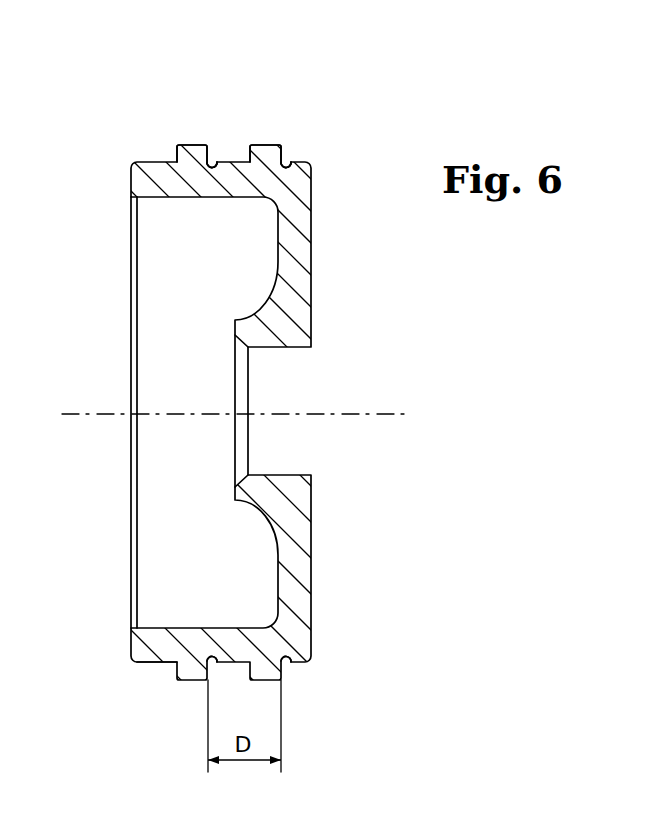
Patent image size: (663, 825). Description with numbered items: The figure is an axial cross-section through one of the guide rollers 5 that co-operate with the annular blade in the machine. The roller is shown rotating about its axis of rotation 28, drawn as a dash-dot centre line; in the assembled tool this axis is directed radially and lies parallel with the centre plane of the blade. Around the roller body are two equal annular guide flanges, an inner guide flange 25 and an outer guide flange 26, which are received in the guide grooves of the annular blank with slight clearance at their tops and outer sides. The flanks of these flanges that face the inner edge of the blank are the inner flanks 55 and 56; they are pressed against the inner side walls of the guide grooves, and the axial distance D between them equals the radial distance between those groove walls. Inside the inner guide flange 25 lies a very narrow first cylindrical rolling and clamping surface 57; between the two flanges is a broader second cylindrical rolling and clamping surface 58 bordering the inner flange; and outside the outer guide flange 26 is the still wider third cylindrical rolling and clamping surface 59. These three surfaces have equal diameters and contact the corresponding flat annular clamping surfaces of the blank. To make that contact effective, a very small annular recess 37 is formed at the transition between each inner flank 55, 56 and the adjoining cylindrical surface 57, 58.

The guide roller 5 is at (366, 574).
The inner guide flange 25 is at (258, 144).
The outer guide flange 26 is at (186, 146).
The axis of rotation 28 is at (393, 413).
The annular recess 37 is at (213, 160).
The inner flank of inner guide flange 55 is at (287, 160).
The inner flank of outer guide flange 56 is at (212, 162).
The first cylindrical rolling and clamping surface 57 is at (296, 667).
The second cylindrical rolling and clamping surface 58 is at (232, 668).
The third cylindrical rolling and clamping surface 59 is at (148, 664).